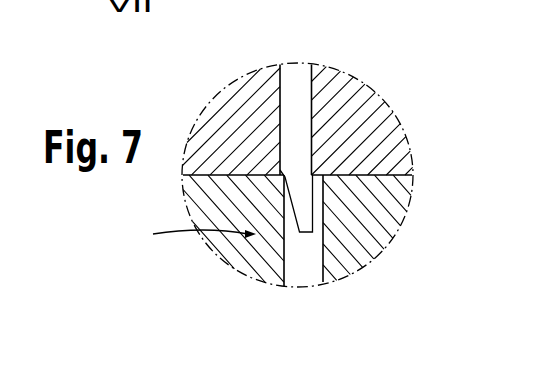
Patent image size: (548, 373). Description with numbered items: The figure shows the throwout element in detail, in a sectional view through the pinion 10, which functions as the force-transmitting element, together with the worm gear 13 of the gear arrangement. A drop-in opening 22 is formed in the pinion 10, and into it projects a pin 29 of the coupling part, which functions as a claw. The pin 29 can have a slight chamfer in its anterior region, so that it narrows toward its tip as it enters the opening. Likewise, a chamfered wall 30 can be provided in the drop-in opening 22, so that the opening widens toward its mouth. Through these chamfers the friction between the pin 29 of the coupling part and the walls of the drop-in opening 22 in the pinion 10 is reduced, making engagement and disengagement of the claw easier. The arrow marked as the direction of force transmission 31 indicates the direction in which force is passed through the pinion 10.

The pinion 10 is at (395, 235).
The worm gear 13 is at (387, 121).
The drop-in opening 22 is at (305, 263).
The chamfered pin on coupling part 29 is at (296, 72).
The chamfered wall of drop-in opening 30 is at (323, 258).
The direction of force transmission 31 is at (191, 238).